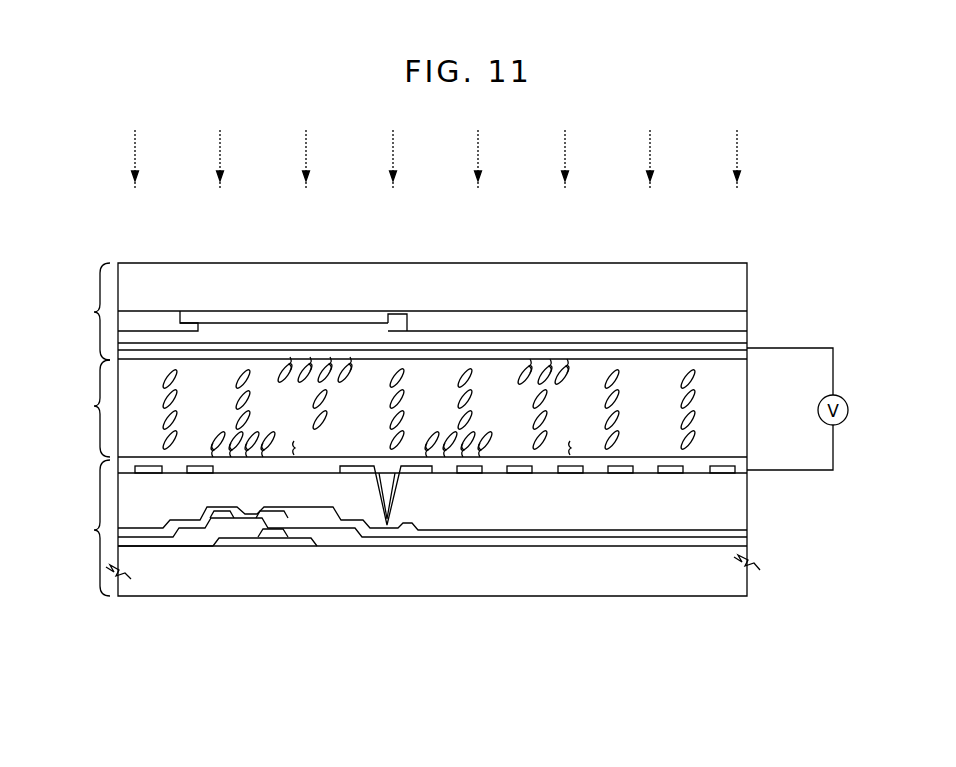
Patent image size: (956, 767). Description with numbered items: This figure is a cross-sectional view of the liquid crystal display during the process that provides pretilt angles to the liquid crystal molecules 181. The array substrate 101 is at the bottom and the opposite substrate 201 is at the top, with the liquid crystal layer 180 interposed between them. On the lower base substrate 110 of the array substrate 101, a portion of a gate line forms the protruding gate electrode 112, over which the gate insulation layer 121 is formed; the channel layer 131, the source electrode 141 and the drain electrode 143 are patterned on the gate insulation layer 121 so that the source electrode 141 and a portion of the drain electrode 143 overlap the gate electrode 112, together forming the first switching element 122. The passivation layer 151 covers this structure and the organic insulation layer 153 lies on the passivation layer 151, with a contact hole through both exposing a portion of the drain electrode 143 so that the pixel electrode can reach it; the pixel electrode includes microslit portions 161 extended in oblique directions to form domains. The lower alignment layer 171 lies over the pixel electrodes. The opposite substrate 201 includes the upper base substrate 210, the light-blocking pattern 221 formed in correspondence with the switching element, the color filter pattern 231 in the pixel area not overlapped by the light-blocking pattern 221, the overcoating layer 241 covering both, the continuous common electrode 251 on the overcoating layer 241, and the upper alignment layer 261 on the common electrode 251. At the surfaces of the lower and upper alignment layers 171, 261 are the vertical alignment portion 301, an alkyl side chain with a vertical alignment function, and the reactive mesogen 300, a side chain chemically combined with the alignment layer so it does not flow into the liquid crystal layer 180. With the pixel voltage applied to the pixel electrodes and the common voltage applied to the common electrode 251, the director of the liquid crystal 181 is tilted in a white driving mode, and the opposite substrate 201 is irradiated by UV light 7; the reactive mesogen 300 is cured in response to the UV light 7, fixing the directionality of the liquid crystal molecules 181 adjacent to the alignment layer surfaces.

The UV light 7 is at (133, 150).
The array substrate 101 is at (79, 528).
The lower base substrate 110 is at (447, 565).
The gate electrode 112 is at (267, 541).
The gate insulation layer 121 is at (188, 547).
The first switching element 122 is at (244, 598).
The channel layer 131 is at (292, 517).
The source electrode 141 is at (230, 520).
The drain electrode 143 is at (311, 577).
The passivation layer 151 is at (500, 535).
The organic insulation layer 153 is at (605, 510).
The microslit portion 161 is at (712, 470).
The lower alignment layer 171 is at (645, 470).
The liquid crystal layer 180 is at (398, 408).
The liquid crystal molecule 181 is at (388, 395).
The opposite substrate 201 is at (79, 311).
The upper base substrate 210 is at (178, 283).
The light-blocking pattern 221 is at (270, 322).
The color filter pattern 231 is at (487, 318).
The overcoating layer 241 is at (611, 333).
The common electrode 251 is at (690, 347).
The upper alignment layer 261 is at (422, 357).
The reactive mesogen 300 is at (527, 372).
The vertical alignment portion 301 is at (568, 446).